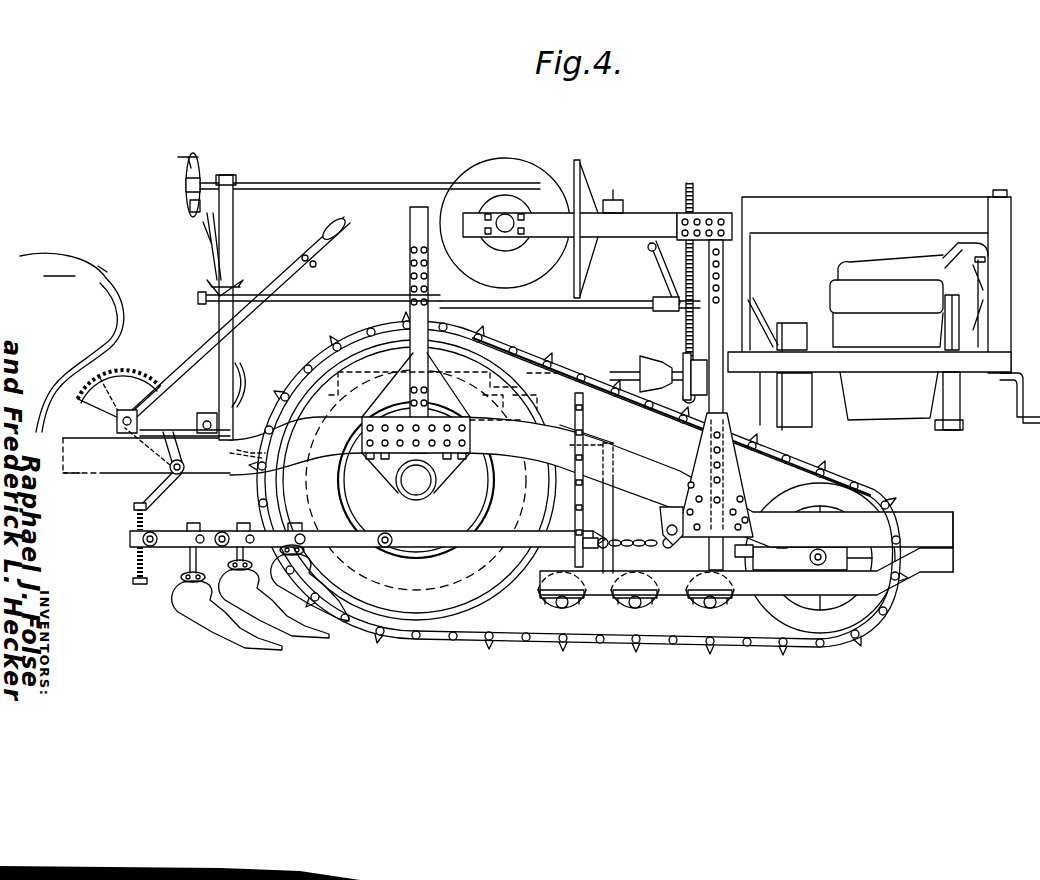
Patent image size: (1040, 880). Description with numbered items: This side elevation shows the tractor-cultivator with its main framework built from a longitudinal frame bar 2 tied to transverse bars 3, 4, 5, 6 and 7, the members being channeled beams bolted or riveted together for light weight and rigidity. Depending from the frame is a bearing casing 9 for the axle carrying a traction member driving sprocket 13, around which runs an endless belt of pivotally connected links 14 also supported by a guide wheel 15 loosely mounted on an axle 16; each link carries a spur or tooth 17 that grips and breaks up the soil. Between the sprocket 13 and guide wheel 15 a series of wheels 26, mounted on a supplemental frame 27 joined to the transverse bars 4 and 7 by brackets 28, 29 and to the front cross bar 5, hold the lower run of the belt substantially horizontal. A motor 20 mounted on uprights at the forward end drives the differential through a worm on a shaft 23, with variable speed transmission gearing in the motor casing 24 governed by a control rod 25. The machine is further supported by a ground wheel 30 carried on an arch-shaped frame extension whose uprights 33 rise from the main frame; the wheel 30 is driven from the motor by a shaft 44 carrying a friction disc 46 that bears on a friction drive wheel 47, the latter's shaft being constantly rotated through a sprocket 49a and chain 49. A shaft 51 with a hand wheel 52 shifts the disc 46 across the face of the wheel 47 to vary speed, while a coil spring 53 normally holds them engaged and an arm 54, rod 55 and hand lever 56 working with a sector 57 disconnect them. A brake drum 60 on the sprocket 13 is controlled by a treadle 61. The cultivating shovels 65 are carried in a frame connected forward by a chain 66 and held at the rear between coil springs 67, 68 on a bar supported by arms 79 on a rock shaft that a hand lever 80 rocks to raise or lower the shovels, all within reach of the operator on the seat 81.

The longitudinal frame bar 2 is at (508, 482).
The transverse frame bar 3 is at (233, 460).
The transverse frame bar 4 is at (613, 443).
The front cross bar 5 is at (954, 522).
The transverse frame bar 6 is at (63, 470).
The transverse frame bar 7 is at (752, 475).
The bearing casing 9 is at (446, 474).
The traction member driving sprocket 13 is at (350, 348).
The pivotally connected links 14 is at (530, 360).
The guide wheel 15 is at (878, 626).
The guide wheel axle 16 is at (818, 552).
The spur or tooth 17 is at (582, 368).
The motor 20 is at (884, 310).
The worm shaft 23 is at (622, 372).
The motor casing 24 is at (762, 395).
The control rod 25 is at (198, 298).
The supporting wheels 26 is at (562, 620).
The supplemental frame 27 is at (686, 580).
The bracket 28 is at (604, 496).
The bracket 29 is at (714, 527).
The ground wheel 30 is at (685, 620).
The upright 33 is at (722, 308).
The shaft 44 is at (507, 221).
The friction disc 46 is at (476, 172).
The friction drive wheel 47 is at (581, 185).
The chain 49 is at (685, 332).
The sprocket 49a is at (694, 196).
The shaft 51 is at (338, 180).
The hand wheel 52 is at (199, 170).
The coil spring 53 is at (420, 308).
The arm 54 is at (660, 270).
The rod 55 is at (556, 295).
The hand lever 56 is at (212, 262).
The sector 57 is at (243, 286).
The brake drum 60 is at (490, 479).
The brake treadle 61 is at (244, 375).
The cultivating shovels 65 is at (320, 617).
The chain 66 is at (660, 525).
The coil spring 67 is at (132, 518).
The coil spring 68 is at (132, 551).
The arms 79 is at (173, 478).
The hand lever 80 is at (205, 352).
The seat 81 is at (66, 262).